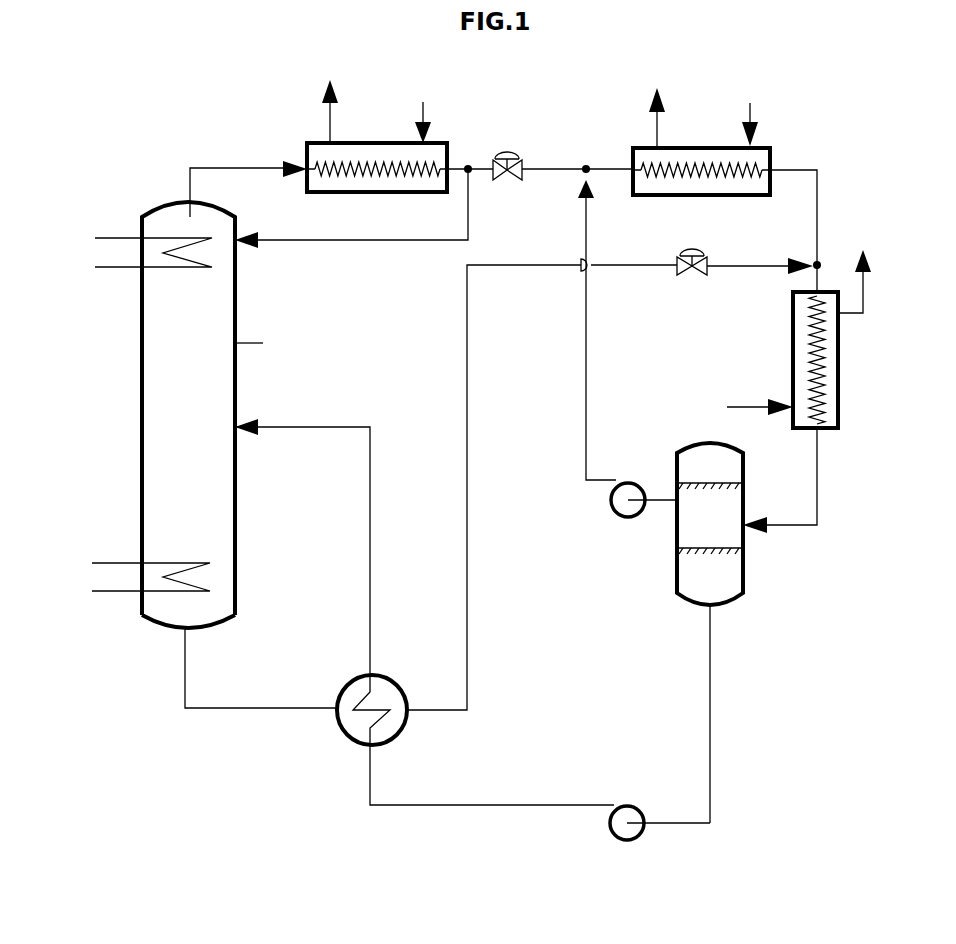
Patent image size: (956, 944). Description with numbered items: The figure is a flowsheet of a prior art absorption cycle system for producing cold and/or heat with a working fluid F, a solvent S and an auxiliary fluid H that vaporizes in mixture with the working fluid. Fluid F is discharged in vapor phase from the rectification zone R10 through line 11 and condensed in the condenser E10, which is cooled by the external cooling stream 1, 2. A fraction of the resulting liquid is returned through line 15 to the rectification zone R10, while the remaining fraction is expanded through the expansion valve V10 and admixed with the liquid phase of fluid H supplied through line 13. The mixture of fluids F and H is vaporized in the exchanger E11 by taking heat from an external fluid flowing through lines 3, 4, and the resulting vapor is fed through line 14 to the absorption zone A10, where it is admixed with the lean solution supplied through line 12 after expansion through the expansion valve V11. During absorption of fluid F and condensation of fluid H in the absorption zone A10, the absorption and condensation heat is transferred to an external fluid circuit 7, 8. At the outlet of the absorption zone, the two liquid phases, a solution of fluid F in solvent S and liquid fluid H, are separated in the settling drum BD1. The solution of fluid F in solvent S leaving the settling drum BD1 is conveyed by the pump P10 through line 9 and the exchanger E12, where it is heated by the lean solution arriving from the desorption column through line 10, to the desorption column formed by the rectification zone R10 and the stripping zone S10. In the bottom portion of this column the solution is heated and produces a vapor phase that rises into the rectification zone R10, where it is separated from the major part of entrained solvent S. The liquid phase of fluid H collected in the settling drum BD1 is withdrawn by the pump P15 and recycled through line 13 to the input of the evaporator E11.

The external cooling stream inlet 1 is at (425, 105).
The external cooling stream outlet 2 is at (328, 113).
The external fluid inlet line 3 is at (751, 110).
The external fluid outlet line 4 is at (653, 99).
The external fluid circuit inlet 7 is at (743, 405).
The external fluid circuit outlet 8 is at (860, 262).
The line 9 is at (370, 772).
The line 10 is at (252, 710).
The line 11 is at (216, 166).
The line 12 is at (467, 398).
The line 13 is at (585, 396).
The line 14 is at (818, 168).
The line 15 is at (387, 242).
The condenser E10 is at (368, 142).
The exchanger E11 is at (700, 147).
The exchanger E12 is at (388, 680).
The expansion valve V10 is at (510, 150).
The expansion valve V11 is at (697, 248).
The rectification zone R10 is at (235, 343).
The stripping zone S10 is at (235, 532).
The absorption zone A10 is at (793, 352).
The settling drum BD1 is at (743, 563).
The pump P10 is at (628, 805).
The pump P15 is at (628, 518).